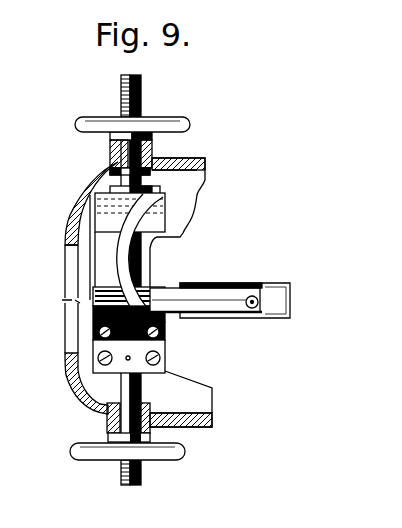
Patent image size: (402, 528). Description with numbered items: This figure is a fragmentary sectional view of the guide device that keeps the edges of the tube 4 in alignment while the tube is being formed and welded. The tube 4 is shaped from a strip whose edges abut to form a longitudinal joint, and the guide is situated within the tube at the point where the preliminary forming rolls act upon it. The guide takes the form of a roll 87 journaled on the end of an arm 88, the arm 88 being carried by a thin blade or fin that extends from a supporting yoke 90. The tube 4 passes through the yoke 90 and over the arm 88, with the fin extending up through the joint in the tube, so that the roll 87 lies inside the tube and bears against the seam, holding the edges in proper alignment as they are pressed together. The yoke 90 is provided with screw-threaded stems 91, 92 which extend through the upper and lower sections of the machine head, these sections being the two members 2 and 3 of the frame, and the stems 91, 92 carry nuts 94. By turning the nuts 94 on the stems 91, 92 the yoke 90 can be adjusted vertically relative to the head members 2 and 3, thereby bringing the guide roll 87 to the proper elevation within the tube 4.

The nut 94 is at (171, 122).
The screw-threaded stem 92 is at (112, 158).
The head member 3 is at (76, 176).
The head member 2 is at (70, 385).
The supporting yoke 90 is at (110, 261).
The arm 88 is at (207, 296).
The roll 87 is at (253, 297).
The tube 4 is at (283, 300).
The screw-threaded stem 91 is at (196, 382).